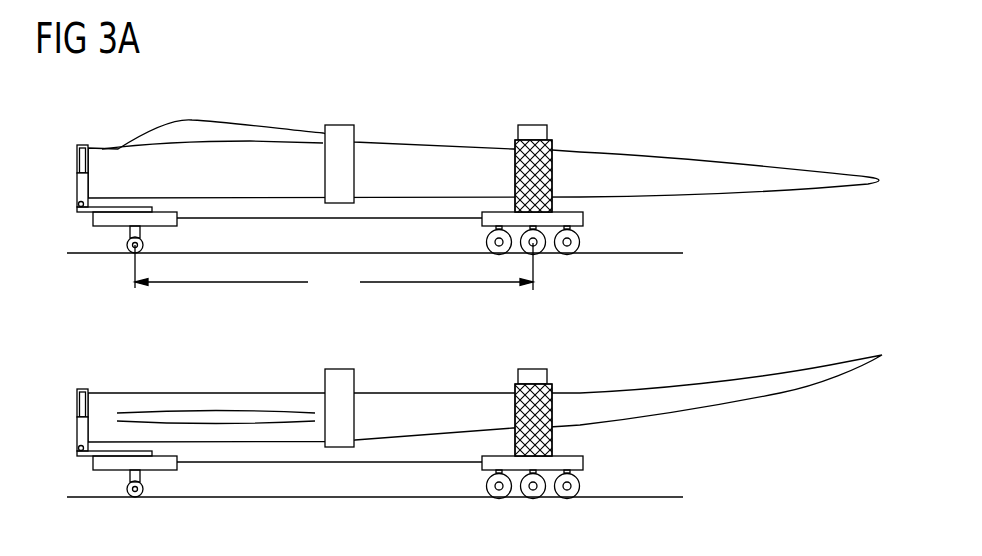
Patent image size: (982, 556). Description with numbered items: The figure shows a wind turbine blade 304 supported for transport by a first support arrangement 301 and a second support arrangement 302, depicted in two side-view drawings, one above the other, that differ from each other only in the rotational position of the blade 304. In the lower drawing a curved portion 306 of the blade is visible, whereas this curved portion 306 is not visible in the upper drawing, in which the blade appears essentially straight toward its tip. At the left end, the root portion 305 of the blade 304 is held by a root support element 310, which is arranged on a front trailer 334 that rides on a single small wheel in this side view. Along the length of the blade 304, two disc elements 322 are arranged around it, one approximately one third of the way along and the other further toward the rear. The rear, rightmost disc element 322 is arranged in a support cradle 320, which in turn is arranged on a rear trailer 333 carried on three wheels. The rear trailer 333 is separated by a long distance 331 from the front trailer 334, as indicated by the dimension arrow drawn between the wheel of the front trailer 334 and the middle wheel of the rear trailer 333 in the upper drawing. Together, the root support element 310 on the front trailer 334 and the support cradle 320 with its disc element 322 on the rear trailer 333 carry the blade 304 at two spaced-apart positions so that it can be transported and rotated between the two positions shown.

The first support arrangement 301 is at (60, 459).
The second support arrangement 302 is at (575, 437).
The blade 304 is at (433, 143).
The root portion 305 is at (103, 158).
The curved portion 306 is at (766, 398).
The root support element 310 is at (78, 168).
The support cradle 320 is at (552, 170).
The disc elements 322 is at (339, 135).
The long distance 331 is at (334, 271).
The rear trailer 333 is at (583, 219).
The front trailer 334 is at (168, 219).